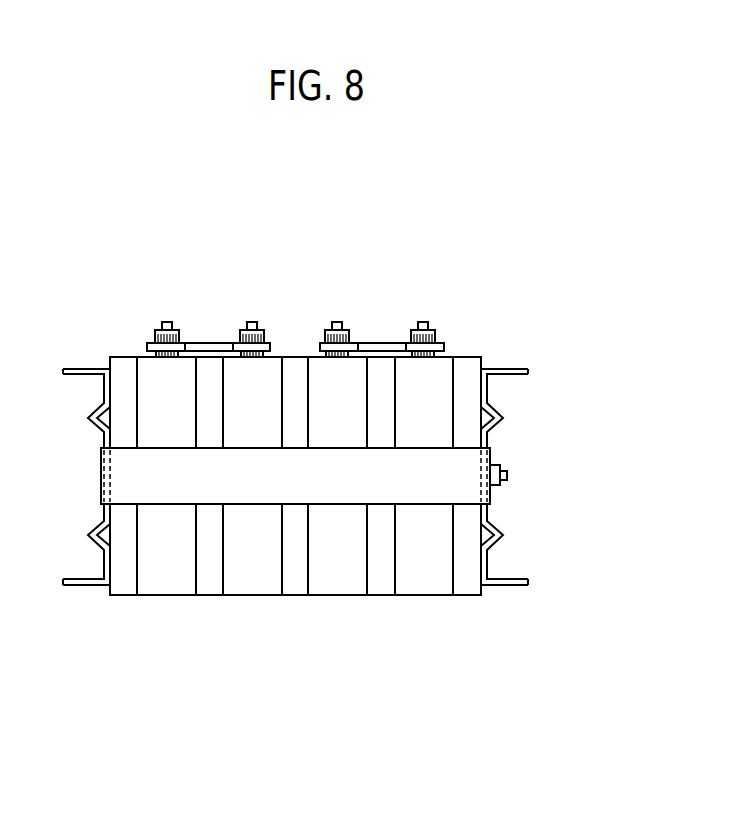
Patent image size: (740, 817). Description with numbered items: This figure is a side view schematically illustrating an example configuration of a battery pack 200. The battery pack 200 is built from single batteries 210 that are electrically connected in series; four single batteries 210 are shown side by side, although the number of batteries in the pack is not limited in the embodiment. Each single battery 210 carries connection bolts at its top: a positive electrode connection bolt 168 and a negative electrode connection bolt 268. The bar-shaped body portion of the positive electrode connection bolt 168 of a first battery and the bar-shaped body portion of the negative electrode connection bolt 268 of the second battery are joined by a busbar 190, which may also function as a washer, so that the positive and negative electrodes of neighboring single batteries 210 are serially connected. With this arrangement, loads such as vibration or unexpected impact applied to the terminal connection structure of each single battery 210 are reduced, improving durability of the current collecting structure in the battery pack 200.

The battery pack 200 is at (558, 272).
The single battery 210 is at (167, 585).
The busbar 190 is at (197, 343).
The positive electrode connection bolt 168 is at (473, 262).
The negative electrode connection bolt 268 is at (337, 322).